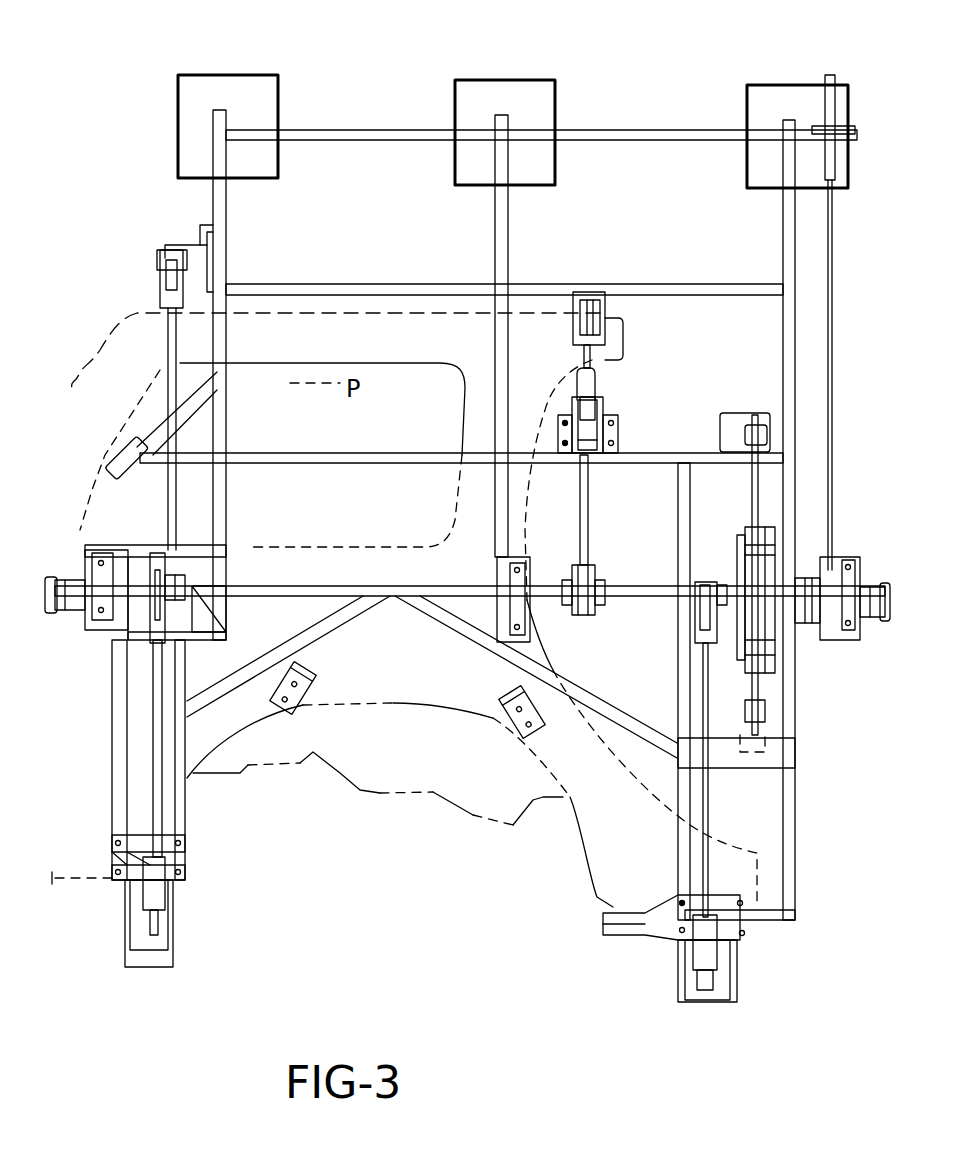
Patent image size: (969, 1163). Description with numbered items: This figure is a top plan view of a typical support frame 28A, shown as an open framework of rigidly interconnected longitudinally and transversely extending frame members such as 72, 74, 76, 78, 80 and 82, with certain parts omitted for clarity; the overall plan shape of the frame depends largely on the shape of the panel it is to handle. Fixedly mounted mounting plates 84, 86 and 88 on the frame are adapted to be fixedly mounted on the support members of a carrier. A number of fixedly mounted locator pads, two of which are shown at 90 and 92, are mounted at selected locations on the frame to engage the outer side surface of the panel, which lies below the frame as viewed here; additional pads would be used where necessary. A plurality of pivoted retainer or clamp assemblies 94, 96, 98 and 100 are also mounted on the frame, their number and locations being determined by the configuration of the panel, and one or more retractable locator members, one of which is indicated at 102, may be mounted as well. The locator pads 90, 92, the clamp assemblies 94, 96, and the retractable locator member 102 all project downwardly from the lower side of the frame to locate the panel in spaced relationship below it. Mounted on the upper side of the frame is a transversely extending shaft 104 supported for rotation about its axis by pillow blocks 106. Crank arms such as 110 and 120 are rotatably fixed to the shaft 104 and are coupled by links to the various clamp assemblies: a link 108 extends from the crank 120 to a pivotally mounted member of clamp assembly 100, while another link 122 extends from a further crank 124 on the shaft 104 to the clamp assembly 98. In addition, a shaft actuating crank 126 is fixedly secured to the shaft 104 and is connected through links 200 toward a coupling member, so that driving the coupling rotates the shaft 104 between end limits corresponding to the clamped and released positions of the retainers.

The support frame 28A is at (205, 193).
The frame member 74 is at (345, 130).
The mounting plate 84 is at (263, 168).
The mounting plate 86 is at (543, 104).
The mounting plate 88 is at (760, 100).
The link 200 is at (834, 345).
The frame member 82 is at (783, 330).
The frame member 72 is at (228, 342).
The center post 78 is at (493, 345).
The frame member 76 is at (438, 455).
The retainer or clamp assembly 94 is at (148, 258).
The retainer or clamp assembly 96 is at (608, 315).
The crank arm 110 is at (205, 580).
The pillow block 106 is at (100, 553).
The shaft 104 is at (338, 546).
The crank 124 is at (128, 556).
The link 122 is at (165, 815).
The retainer or clamp assembly 98 is at (168, 897).
The locator pad 90 is at (300, 672).
The locator pad 92 is at (510, 700).
The link 108 is at (678, 655).
The frame member 80 is at (678, 850).
The crank 120 is at (700, 590).
The shaft actuating crank 126 is at (830, 640).
The retractable locator member 102 is at (735, 966).
The retainer or clamp assembly 100 is at (700, 947).